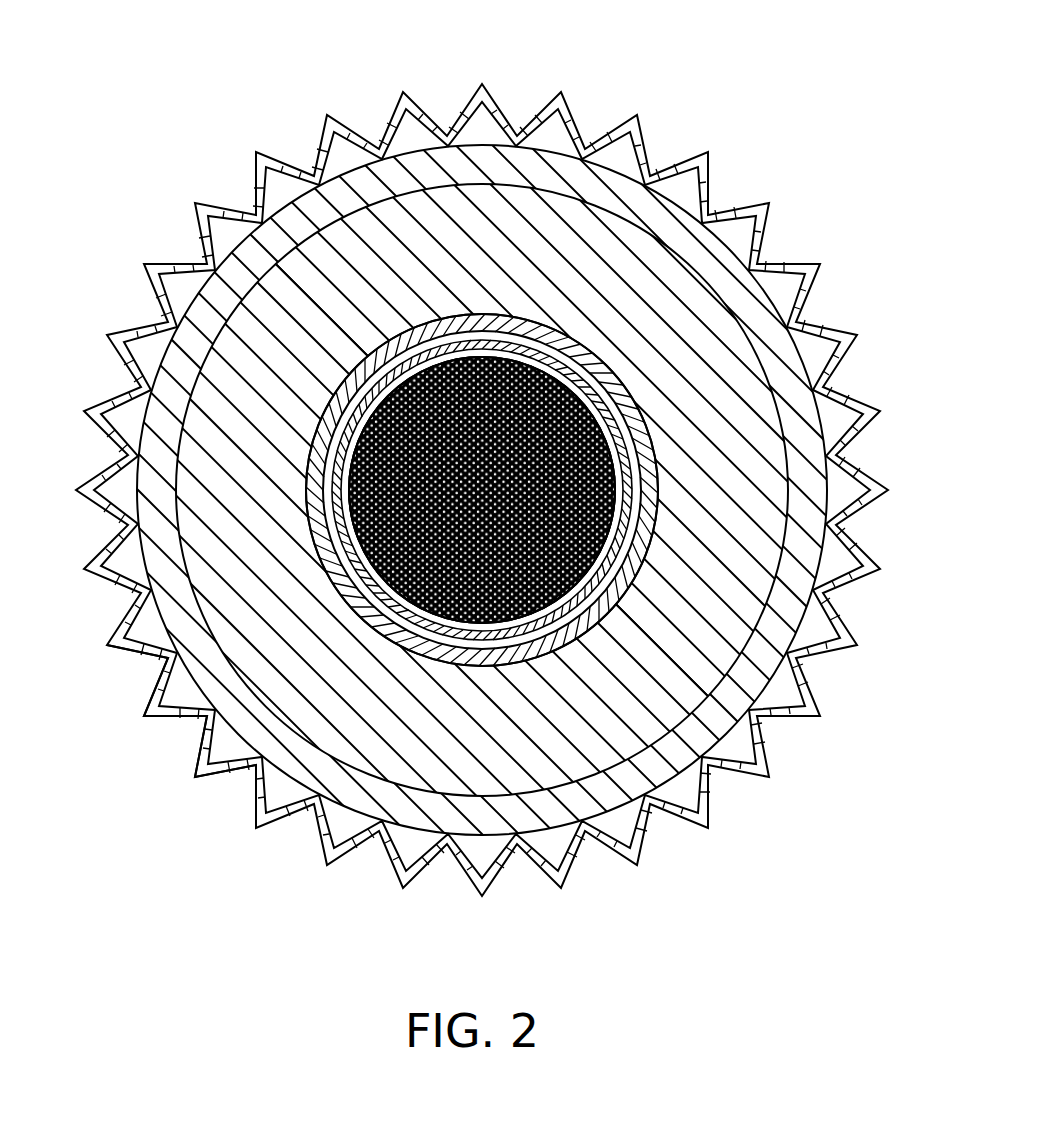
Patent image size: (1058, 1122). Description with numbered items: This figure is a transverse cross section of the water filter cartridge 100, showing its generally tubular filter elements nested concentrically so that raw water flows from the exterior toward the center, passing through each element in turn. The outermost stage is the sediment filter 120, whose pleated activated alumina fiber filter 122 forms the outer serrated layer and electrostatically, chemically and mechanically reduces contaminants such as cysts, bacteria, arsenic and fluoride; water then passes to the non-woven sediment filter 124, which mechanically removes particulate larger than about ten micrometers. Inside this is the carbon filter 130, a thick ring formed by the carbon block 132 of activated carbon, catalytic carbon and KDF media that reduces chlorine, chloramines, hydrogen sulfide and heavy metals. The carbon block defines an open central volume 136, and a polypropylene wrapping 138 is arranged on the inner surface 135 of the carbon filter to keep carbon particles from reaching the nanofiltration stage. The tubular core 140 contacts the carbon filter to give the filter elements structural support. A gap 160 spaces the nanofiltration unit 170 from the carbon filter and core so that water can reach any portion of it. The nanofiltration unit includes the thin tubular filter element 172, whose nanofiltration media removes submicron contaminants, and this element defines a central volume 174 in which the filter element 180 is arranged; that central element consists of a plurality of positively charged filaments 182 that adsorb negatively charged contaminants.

The filter cartridge 100 is at (813, 107).
The sediment filter 120 is at (259, 852).
The activated alumina fiber filter 122 is at (180, 715).
The non-woven sediment filter 124 is at (363, 803).
The carbon filter 130 is at (233, 360).
The carbon block 132 is at (215, 597).
The inner surface 135 is at (340, 388).
The open central volume 136 is at (457, 323).
The wrapping 138 is at (212, 337).
The core 140 is at (478, 645).
The gap 160 is at (533, 626).
The nanofiltration unit 170 is at (581, 596).
The tubular filter element 172 is at (606, 548).
The central volume 174 is at (596, 457).
The filter element 180 is at (498, 416).
The filaments 182 is at (539, 424).